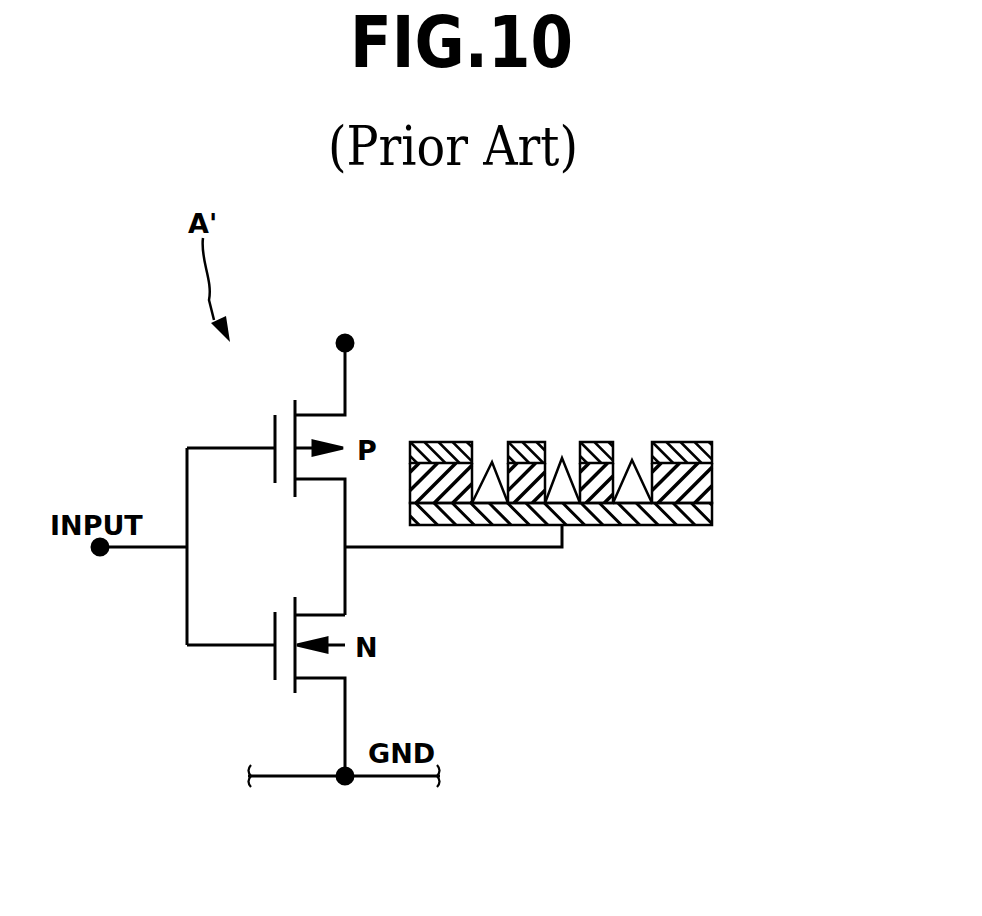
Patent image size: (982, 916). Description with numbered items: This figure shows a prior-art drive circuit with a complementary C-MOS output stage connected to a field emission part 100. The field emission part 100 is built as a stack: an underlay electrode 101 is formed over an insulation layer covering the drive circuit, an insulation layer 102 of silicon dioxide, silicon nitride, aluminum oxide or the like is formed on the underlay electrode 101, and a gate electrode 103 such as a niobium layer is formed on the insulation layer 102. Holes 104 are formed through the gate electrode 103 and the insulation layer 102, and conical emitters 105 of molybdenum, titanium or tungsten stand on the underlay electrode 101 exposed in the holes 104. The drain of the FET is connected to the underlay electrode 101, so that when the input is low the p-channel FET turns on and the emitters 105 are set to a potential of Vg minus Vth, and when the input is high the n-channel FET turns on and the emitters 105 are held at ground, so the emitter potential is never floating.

The field emission part 100 is at (621, 405).
The underlay electrode 101 is at (712, 516).
The insulation layer 102 is at (712, 476).
The gate electrode 103 is at (712, 444).
The holes 104 is at (565, 460).
The conical emitters 105 is at (484, 478).